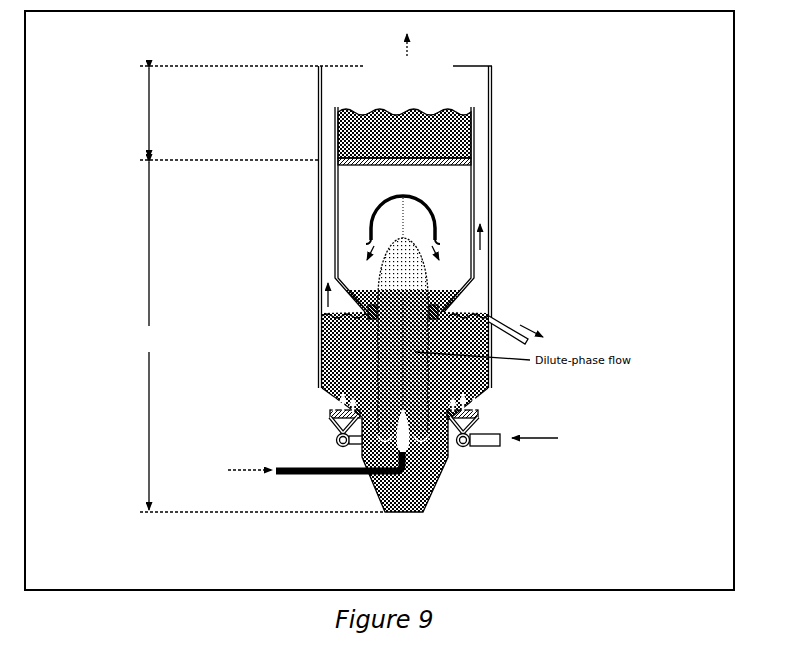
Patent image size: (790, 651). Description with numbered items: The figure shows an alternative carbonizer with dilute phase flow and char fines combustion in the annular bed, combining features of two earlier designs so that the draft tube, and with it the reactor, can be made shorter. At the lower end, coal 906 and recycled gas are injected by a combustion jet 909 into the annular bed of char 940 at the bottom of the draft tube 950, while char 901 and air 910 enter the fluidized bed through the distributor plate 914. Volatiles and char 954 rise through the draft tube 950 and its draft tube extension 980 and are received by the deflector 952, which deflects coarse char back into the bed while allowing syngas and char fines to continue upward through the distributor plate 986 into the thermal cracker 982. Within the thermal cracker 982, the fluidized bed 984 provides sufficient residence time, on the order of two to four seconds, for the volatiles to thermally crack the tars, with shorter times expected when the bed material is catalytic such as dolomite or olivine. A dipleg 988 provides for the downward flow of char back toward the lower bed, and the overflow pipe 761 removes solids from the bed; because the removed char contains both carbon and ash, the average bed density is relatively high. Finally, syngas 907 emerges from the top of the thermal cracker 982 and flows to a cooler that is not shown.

The syngas 907 is at (418, 52).
The thermal cracker 982 is at (227, 112).
The distributor plate 986 is at (336, 170).
The fluidized bed 984 is at (443, 137).
The deflector 952 is at (437, 214).
The volatiles and char 954 is at (428, 280).
The draft tube extension 980 is at (336, 245).
The dipleg 988 is at (442, 311).
The overflow pipe 761 is at (554, 321).
The draft tube 950 is at (430, 397).
The annular bed of char 940 is at (340, 372).
The air 910 is at (328, 212).
The distributor plate 914 is at (450, 420).
The char 901 is at (554, 438).
The jet 909 is at (395, 448).
The coal 906 is at (300, 472).